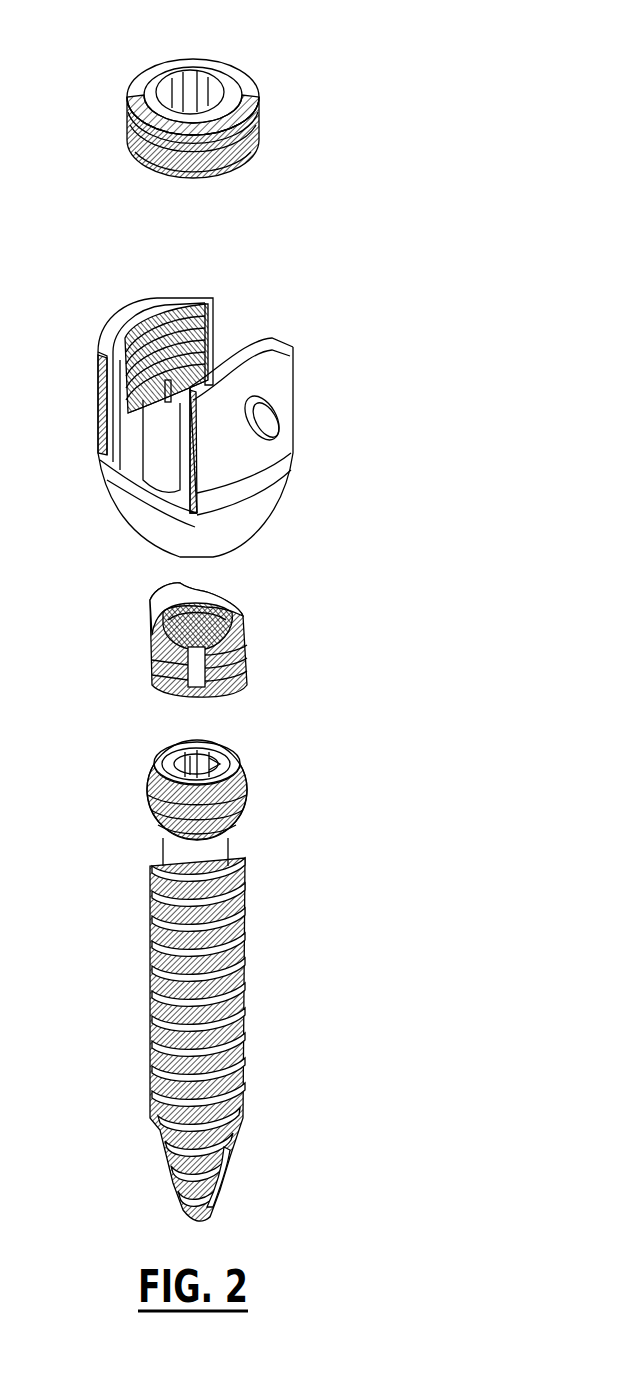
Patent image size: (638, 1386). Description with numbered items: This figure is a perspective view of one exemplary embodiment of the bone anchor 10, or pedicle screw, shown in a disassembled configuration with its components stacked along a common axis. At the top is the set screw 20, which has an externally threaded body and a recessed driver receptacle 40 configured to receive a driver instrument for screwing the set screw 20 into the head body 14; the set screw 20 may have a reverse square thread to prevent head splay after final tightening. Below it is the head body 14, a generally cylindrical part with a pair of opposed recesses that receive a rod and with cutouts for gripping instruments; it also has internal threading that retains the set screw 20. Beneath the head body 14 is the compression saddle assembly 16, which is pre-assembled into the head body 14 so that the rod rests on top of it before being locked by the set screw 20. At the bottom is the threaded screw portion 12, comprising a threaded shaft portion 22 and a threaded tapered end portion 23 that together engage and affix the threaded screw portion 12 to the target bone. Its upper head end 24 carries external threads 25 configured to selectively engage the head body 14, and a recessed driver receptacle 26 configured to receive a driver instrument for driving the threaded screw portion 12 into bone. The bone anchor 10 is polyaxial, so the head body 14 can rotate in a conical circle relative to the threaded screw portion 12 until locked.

The bone anchor 10 is at (342, 264).
The threaded screw portion 12 is at (221, 959).
The head body 14 is at (289, 465).
The compression saddle assembly 16 is at (247, 655).
The set screw 20 is at (232, 100).
The threaded shaft portion 22 is at (247, 1010).
The threaded tapered end portion 23 is at (224, 1165).
The head end 24 is at (218, 752).
The external threads 25 is at (221, 768).
The recessed driver receptacle 26 is at (191, 766).
The recessed driver receptacle 40 is at (205, 98).